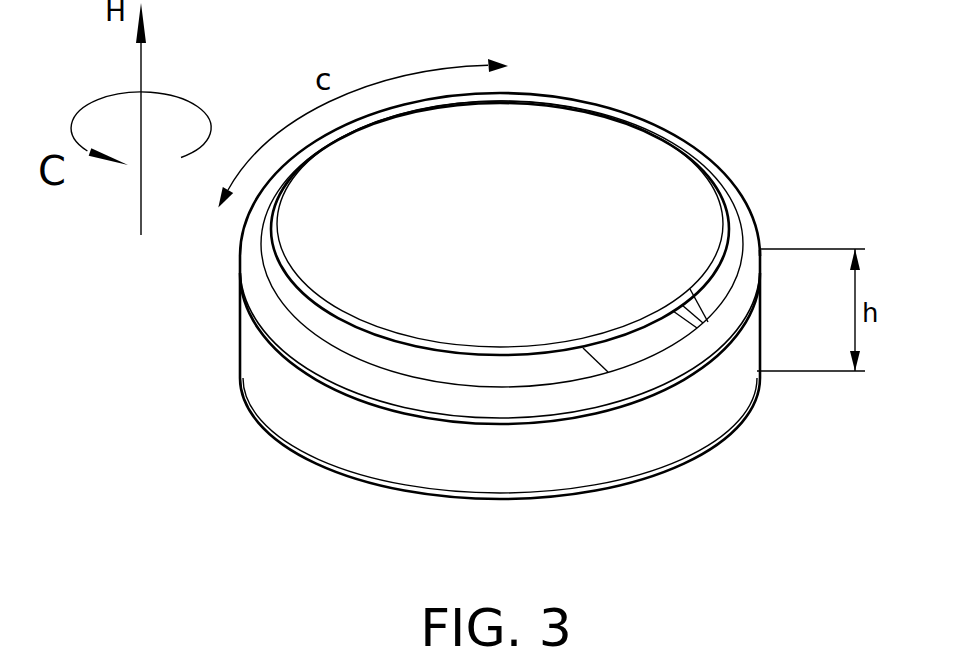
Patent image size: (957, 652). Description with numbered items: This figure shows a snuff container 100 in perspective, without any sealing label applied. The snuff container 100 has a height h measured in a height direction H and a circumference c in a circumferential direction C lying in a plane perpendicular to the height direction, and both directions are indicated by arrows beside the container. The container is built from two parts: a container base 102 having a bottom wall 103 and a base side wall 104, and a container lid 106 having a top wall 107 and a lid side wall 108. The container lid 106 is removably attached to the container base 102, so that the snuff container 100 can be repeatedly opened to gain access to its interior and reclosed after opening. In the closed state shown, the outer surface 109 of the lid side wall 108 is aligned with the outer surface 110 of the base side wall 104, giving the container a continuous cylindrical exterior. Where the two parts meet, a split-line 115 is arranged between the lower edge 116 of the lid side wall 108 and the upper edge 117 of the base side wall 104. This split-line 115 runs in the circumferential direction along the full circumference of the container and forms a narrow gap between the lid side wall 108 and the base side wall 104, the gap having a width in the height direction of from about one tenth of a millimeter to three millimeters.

The snuff container 100 is at (698, 86).
The container base 102 is at (683, 410).
The bottom wall 103 is at (442, 496).
The base side wall 104 is at (736, 374).
The container lid 106 is at (703, 228).
The top wall 107 is at (566, 178).
The lid side wall 108 is at (240, 262).
The outer surface of the lid side wall 109 is at (280, 334).
The outer surface of the base side wall 110 is at (307, 413).
The split-line 115 is at (386, 405).
The lower edge of the lid side wall 116 is at (588, 396).
The upper edge of the base side wall 117 is at (553, 423).